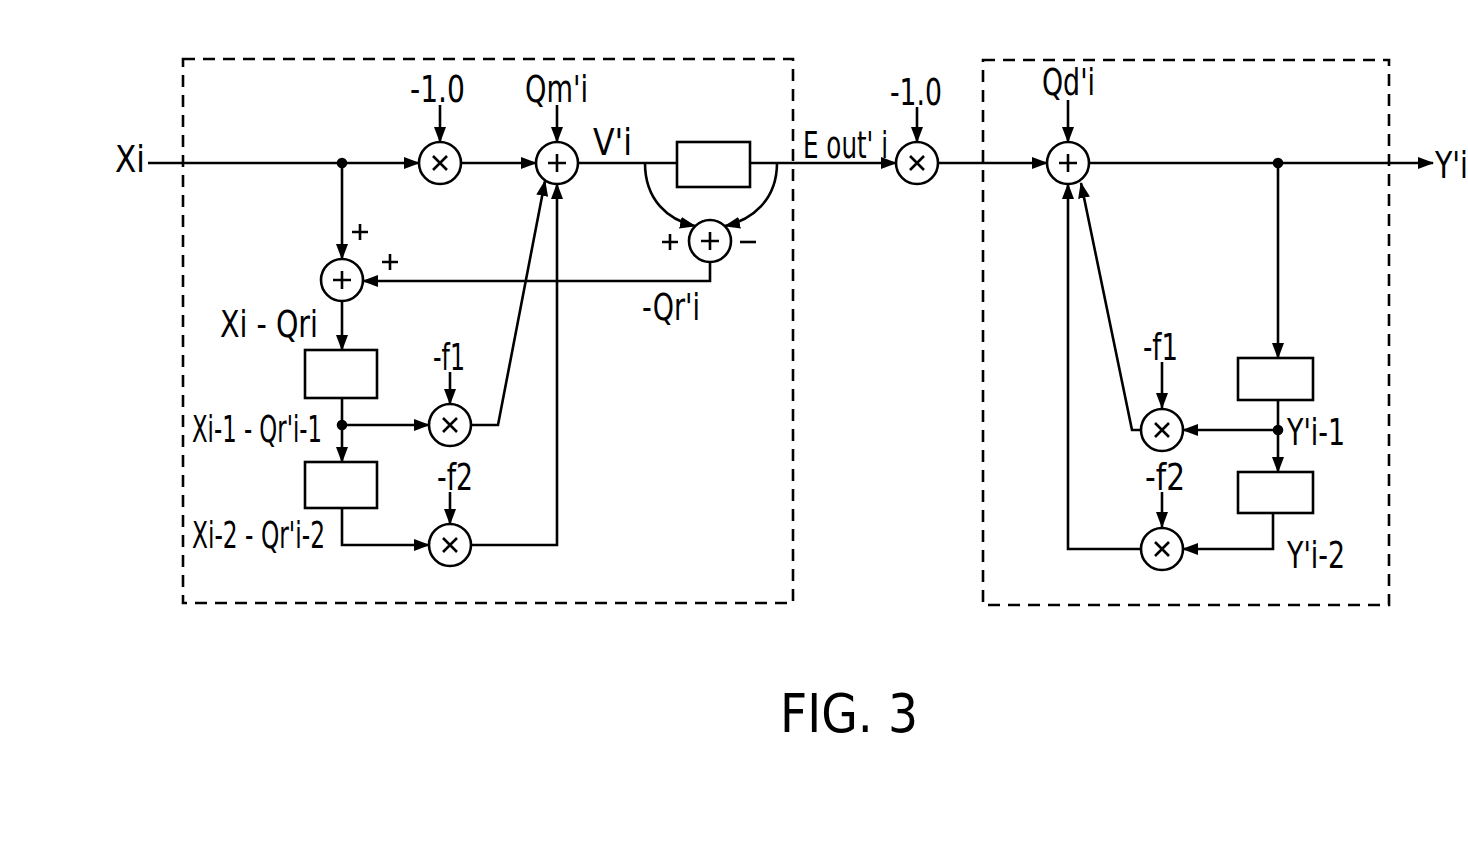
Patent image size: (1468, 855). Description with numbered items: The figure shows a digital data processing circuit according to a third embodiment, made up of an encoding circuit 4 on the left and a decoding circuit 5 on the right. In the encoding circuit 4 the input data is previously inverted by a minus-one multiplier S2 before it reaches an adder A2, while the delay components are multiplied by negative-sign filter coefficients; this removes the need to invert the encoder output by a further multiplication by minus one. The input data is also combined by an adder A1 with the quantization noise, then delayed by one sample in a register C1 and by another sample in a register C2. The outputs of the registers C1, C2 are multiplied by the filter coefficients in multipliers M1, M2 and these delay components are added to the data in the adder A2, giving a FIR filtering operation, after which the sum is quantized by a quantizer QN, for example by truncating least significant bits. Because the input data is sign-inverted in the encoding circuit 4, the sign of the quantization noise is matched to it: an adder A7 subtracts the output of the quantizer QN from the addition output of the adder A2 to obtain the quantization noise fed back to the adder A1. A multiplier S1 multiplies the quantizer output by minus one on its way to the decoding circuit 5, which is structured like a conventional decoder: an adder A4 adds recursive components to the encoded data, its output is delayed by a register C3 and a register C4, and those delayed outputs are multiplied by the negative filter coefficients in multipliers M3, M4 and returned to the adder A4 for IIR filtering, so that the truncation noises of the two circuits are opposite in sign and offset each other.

The encoding circuit 4 is at (425, 605).
The decoding circuit 5 is at (1172, 607).
The multiplier S1 is at (907, 184).
The -1 multiplier S2 is at (437, 184).
The adder A1 is at (323, 267).
The adder A2 is at (538, 153).
The adder A4 is at (1055, 182).
The adder A7 is at (726, 260).
The quantizer QN is at (705, 142).
The register C1 is at (377, 378).
The register C2 is at (405, 480).
The register C3 is at (1313, 380).
The register C4 is at (1313, 490).
The multiplier M1 is at (465, 440).
The multiplier M2 is at (464, 560).
The multiplier M3 is at (1180, 410).
The multiplier M4 is at (1175, 565).